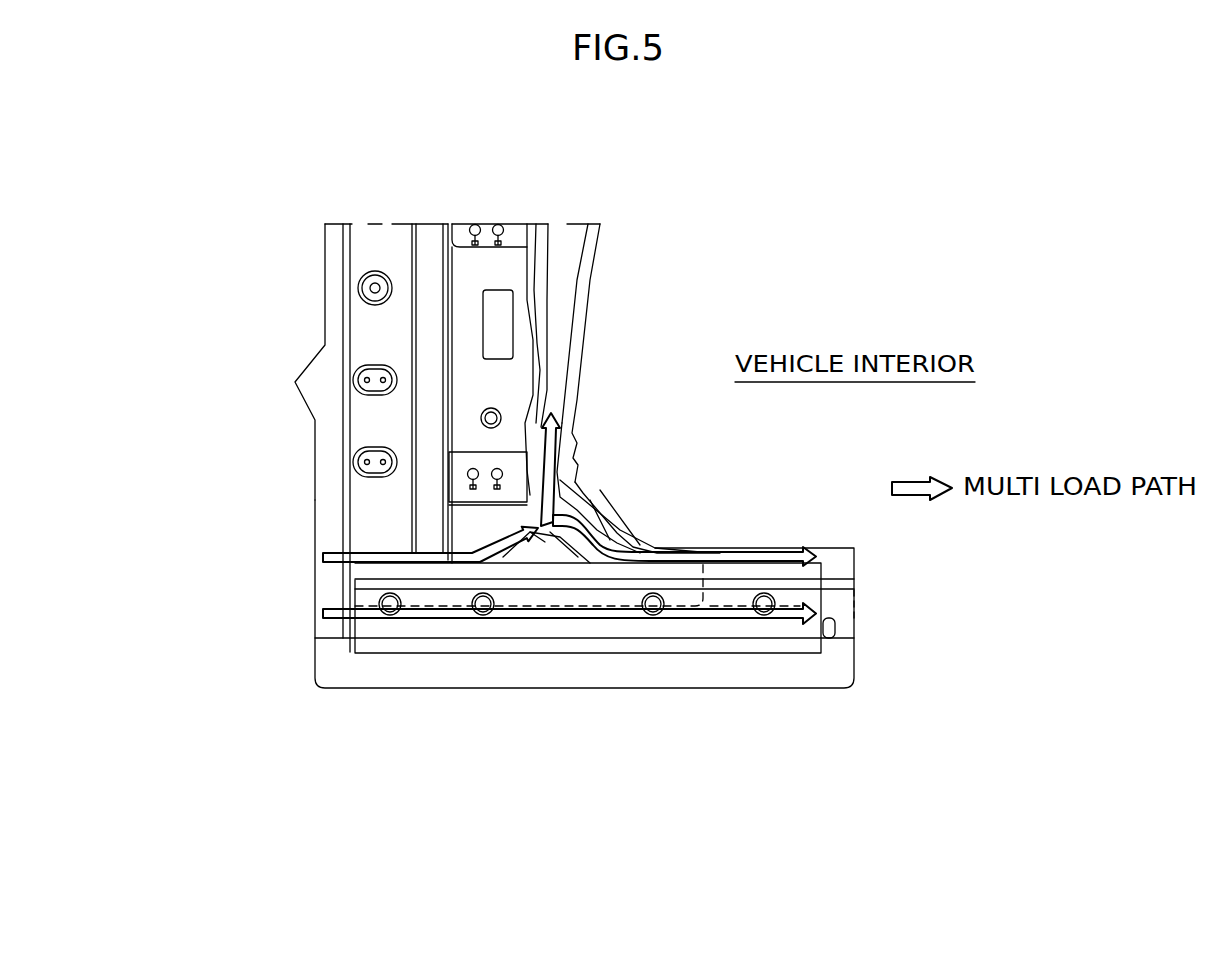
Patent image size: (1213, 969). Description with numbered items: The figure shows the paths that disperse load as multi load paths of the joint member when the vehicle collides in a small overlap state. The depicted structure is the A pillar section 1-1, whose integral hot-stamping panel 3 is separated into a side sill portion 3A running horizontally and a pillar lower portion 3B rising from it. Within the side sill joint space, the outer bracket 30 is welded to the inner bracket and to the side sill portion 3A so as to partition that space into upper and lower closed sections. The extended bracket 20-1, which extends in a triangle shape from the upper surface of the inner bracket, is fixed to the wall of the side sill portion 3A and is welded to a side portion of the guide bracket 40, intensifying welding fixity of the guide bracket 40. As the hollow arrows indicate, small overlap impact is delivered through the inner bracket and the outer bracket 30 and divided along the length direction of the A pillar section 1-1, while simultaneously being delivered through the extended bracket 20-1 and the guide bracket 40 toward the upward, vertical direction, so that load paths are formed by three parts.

The A pillar section 1-1 is at (612, 278).
The guide bracket 40 is at (548, 523).
The extended bracket 20-1 is at (562, 548).
The integral hot-stamping panel 3 is at (170, 560).
The side sill portion 3A is at (313, 670).
The pillar lower portion 3B is at (313, 502).
The outer bracket 30 is at (590, 630).